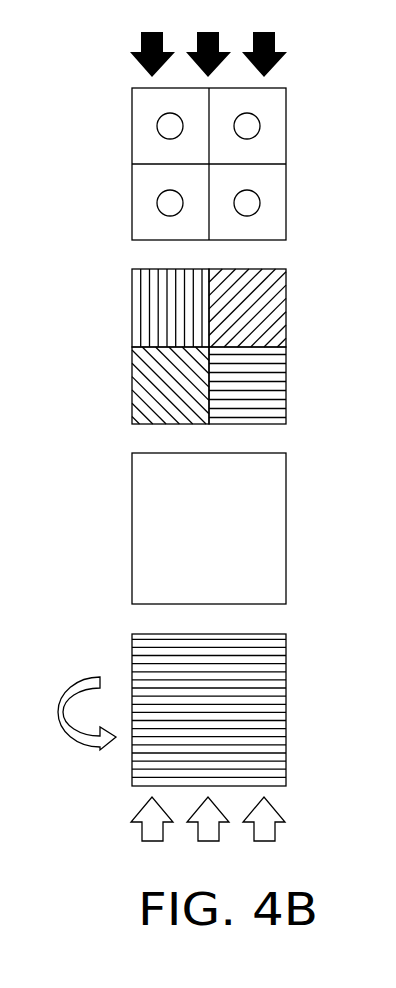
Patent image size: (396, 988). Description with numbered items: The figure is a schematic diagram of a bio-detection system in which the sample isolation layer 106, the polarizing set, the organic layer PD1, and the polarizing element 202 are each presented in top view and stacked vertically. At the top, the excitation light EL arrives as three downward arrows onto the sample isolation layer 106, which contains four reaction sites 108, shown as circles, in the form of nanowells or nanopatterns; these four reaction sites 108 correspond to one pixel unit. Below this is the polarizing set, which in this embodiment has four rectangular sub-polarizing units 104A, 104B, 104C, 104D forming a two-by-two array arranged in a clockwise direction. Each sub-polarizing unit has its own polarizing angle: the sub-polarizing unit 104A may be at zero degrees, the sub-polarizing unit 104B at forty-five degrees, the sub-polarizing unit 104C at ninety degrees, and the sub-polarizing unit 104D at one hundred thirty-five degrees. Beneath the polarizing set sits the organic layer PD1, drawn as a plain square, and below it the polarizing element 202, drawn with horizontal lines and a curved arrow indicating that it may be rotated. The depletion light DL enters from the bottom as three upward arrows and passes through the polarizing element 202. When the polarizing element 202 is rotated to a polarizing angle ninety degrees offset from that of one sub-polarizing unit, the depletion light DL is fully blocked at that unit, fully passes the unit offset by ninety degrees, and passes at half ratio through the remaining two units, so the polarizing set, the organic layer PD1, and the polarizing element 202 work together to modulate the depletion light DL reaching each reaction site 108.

The excitation light EL is at (277, 43).
The reaction site 108 is at (258, 116).
The sample isolation layer 106 is at (249, 158).
The sub-polarizing unit 104A is at (155, 312).
The sub-polarizing unit 104B is at (263, 312).
The sub-polarizing unit 104C is at (263, 390).
The sub-polarizing unit 104D is at (155, 392).
The organic layer PD1 is at (263, 527).
The polarizing element 202 is at (263, 709).
The depletion light DL is at (267, 830).